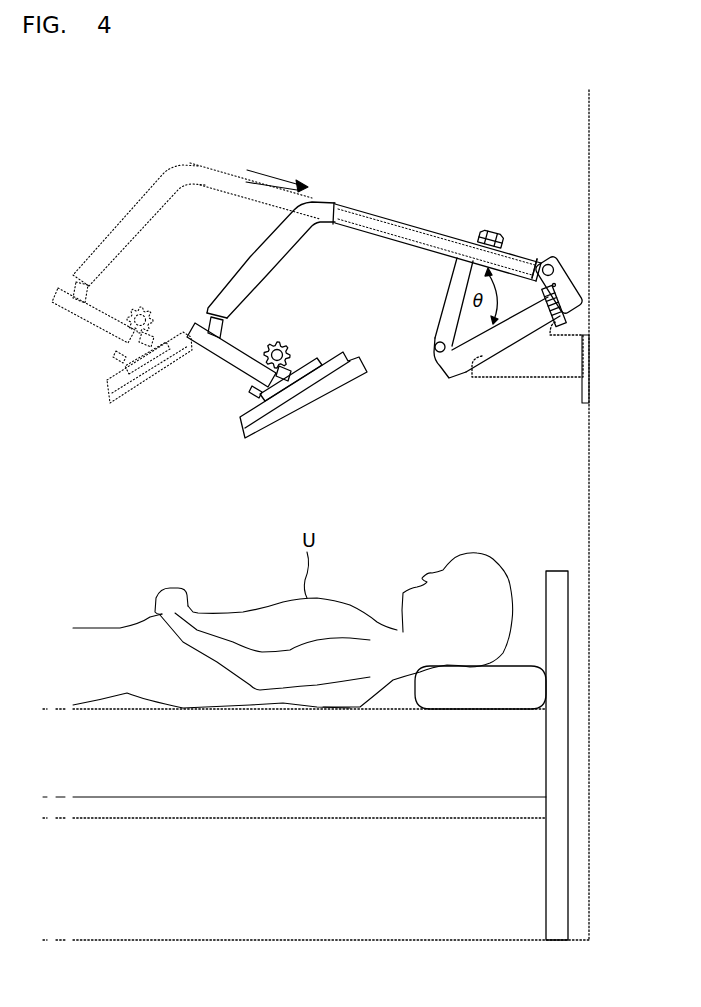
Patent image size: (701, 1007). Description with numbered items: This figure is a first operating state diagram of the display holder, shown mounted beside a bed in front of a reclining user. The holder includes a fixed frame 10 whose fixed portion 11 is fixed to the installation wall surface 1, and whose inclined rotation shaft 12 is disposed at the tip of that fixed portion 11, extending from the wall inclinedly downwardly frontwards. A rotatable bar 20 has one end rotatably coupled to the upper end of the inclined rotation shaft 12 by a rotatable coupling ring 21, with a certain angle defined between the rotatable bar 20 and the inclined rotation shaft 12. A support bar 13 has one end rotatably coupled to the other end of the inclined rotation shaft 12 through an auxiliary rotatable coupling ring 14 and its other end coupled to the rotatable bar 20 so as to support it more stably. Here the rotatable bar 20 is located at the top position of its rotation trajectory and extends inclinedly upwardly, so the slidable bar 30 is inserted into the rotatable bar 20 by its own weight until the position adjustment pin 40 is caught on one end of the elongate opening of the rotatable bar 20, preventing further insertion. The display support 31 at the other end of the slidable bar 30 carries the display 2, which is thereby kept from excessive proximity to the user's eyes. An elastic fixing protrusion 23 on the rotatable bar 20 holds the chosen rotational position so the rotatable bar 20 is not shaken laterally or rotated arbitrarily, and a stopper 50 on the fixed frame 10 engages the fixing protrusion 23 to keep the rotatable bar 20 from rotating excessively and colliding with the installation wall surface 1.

The installation wall surface 1 is at (589, 167).
The display 2 is at (303, 401).
The fixed frame 10 is at (542, 392).
The fixed portion 11 is at (586, 364).
The inclined rotation shaft 12 is at (496, 348).
The support bar 13 is at (448, 298).
The auxiliary rotatable coupling ring 14 is at (436, 364).
The rotatable bar 20 is at (398, 222).
The rotatable coupling ring 21 is at (566, 275).
The elastic fixing protrusion 23 is at (546, 292).
The slidable bar 30 is at (257, 252).
The display support 31 is at (237, 361).
The position adjustment pin 40 is at (493, 231).
The stopper 50 is at (567, 314).